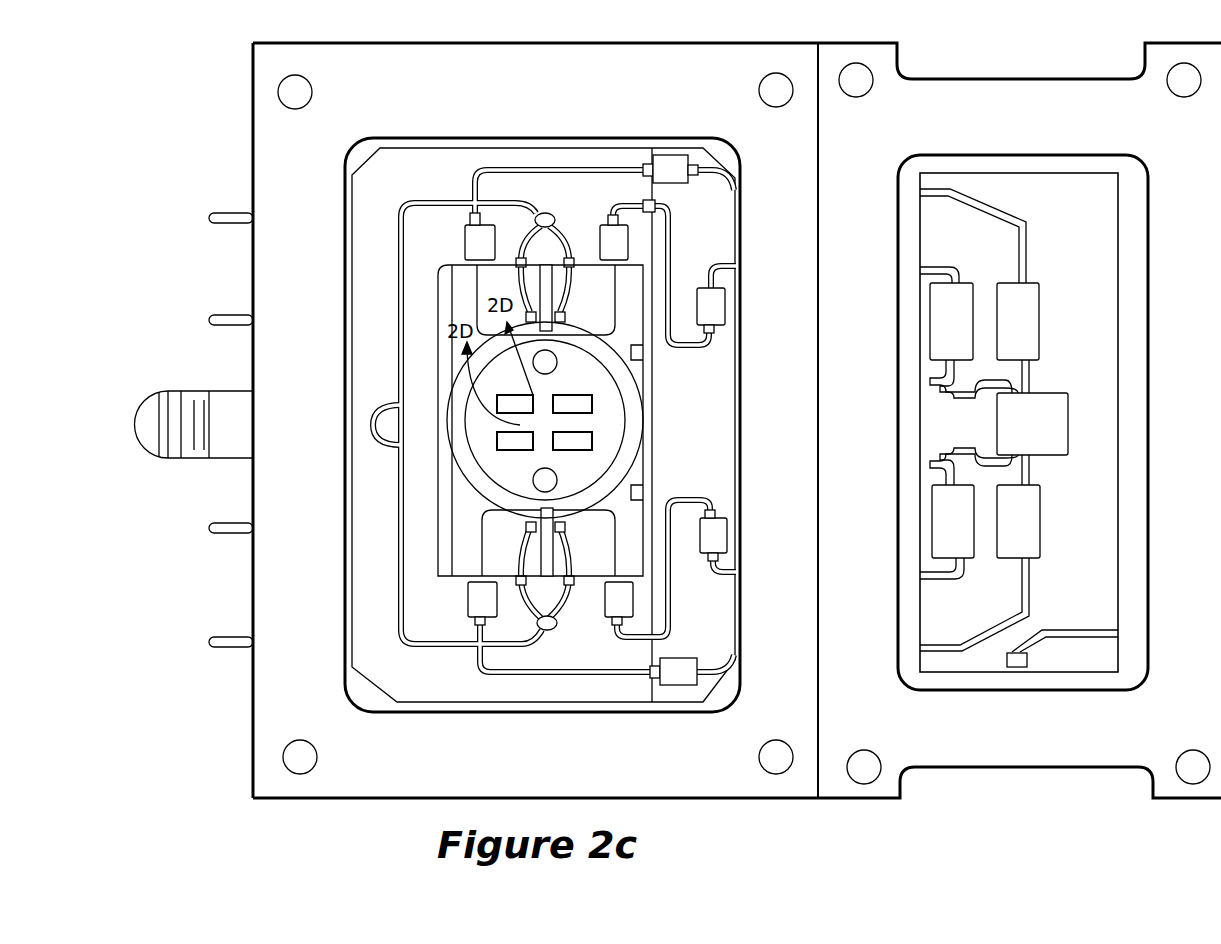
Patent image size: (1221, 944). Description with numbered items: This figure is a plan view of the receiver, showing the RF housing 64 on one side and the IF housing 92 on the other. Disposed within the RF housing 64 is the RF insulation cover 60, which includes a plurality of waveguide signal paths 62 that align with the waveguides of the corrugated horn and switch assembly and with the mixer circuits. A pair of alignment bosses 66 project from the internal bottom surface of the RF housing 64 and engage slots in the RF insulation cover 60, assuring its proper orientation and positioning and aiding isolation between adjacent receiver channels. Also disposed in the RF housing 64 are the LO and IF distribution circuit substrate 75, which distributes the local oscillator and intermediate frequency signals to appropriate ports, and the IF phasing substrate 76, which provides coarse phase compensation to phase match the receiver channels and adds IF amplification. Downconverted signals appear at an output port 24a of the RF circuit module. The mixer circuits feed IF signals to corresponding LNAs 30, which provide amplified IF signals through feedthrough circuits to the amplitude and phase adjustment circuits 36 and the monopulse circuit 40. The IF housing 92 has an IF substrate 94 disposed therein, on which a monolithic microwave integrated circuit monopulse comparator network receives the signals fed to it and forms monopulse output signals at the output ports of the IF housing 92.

The RF housing 64 is at (715, 420).
The output port 24a is at (181, 391).
The LO and IF distribution circuit substrate 75 is at (542, 425).
The IF phasing substrate 76 is at (540, 420).
The RF insulation cover 60 is at (635, 440).
The waveguide signal paths 62 is at (592, 440).
The LNAs 30 is at (465, 244).
The alignment bosses 66 is at (602, 336).
The IF housing 92 is at (1047, 407).
The IF substrate 94 is at (1019, 422).
The amplitude and phase adjustment circuits 36 is at (960, 300).
The monopulse circuit 40 is at (1045, 410).